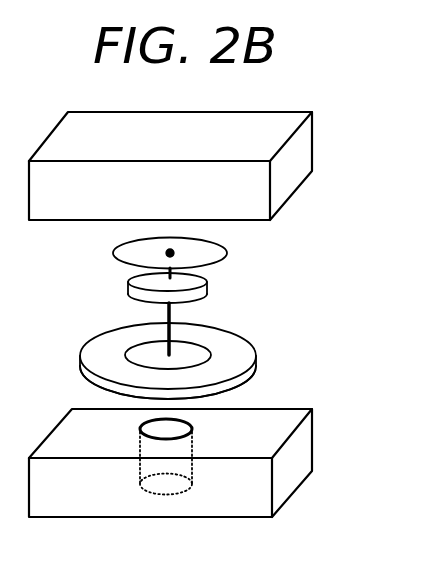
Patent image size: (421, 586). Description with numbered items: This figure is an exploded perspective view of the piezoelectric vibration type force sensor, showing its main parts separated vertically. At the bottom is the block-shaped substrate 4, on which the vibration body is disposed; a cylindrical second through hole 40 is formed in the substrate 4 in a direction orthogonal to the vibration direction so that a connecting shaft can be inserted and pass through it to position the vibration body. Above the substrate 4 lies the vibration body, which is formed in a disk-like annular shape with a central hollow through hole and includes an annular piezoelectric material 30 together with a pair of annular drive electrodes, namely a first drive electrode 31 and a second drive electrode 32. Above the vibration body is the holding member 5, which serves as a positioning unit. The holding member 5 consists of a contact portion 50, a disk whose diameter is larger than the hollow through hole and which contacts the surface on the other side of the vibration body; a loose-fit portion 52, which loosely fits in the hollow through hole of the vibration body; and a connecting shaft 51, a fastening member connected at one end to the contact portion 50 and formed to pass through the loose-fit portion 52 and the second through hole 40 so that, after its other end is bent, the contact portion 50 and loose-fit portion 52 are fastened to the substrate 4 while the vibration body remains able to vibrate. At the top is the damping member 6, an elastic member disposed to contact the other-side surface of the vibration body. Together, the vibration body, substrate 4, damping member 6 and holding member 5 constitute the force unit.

The damping member 6 is at (303, 152).
The holding member 5 is at (312, 255).
The contact portion 50 is at (222, 247).
The loose-fit portion 52 is at (193, 293).
The connecting shaft 51 is at (176, 306).
The piezoelectric material 30 is at (215, 356).
The second drive electrode 32 is at (245, 350).
The first drive electrode 31 is at (245, 385).
The substrate 4 is at (303, 453).
The second through hole 40 is at (164, 503).